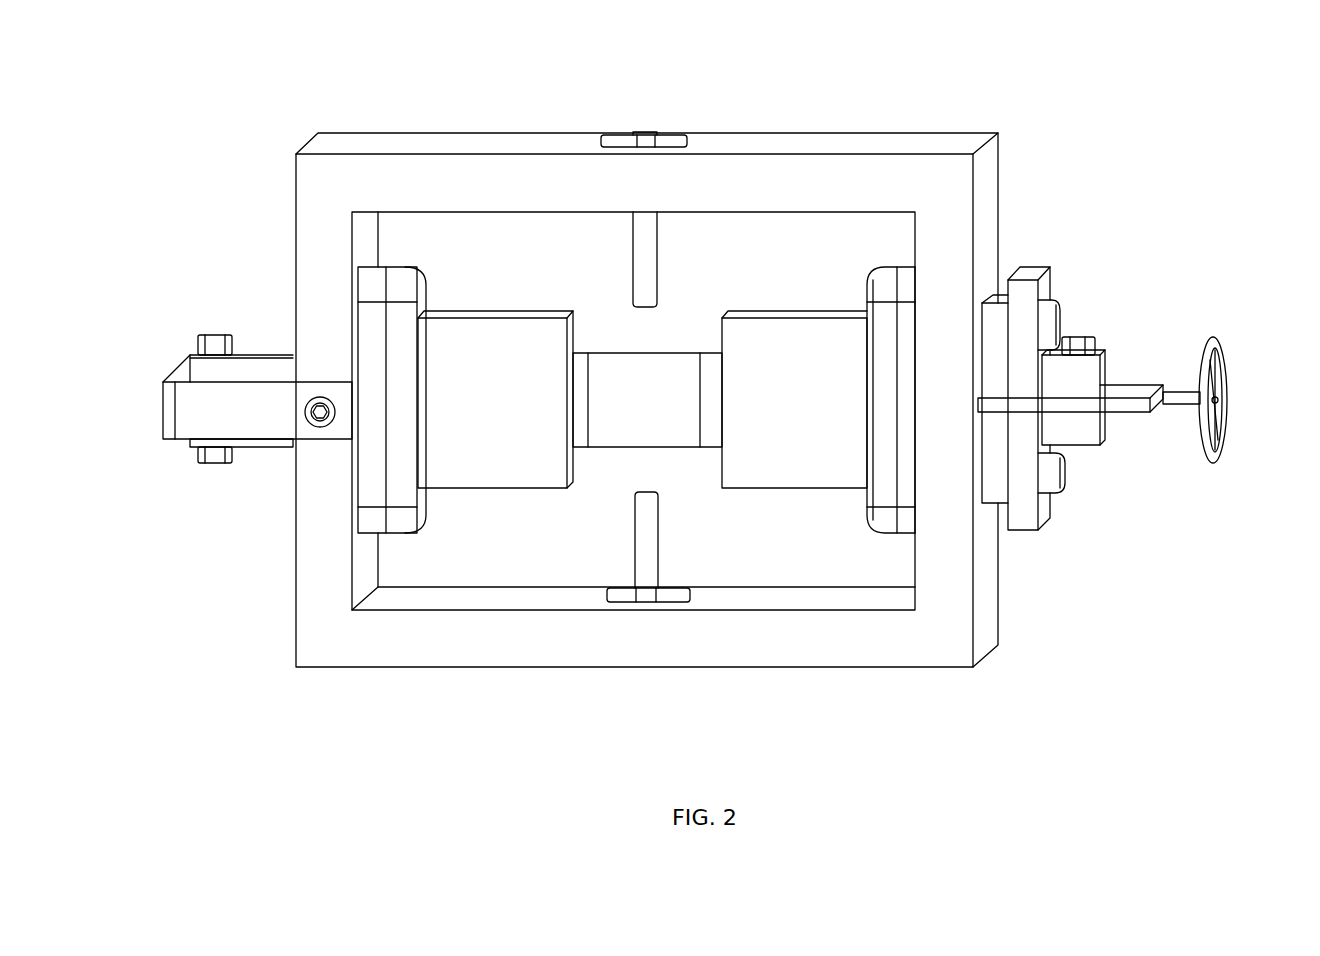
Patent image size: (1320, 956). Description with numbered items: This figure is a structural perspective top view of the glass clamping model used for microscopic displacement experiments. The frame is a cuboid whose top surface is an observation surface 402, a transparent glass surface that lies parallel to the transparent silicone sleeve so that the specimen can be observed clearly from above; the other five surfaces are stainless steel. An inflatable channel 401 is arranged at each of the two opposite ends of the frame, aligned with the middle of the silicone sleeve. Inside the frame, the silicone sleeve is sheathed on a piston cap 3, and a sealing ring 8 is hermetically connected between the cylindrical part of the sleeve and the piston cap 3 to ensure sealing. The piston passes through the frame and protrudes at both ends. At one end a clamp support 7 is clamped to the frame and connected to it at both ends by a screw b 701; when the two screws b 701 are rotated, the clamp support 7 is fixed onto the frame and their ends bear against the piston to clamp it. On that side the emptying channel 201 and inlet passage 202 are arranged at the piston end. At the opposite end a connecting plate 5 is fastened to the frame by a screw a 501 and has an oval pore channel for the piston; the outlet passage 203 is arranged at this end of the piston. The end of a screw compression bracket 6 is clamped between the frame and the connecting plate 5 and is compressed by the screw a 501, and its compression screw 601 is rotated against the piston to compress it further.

The piston cap 3 is at (368, 288).
The inflatable channel 401 is at (648, 233).
The observation surface 402 is at (495, 272).
The sealing ring 8 is at (386, 507).
The clamp support 7 is at (180, 415).
The emptying channel 201 is at (213, 335).
The inlet passage 202 is at (215, 465).
The screw b 701 is at (316, 424).
The connecting plate 5 is at (1027, 522).
The screw a 501 is at (1053, 495).
The outlet passage 203 is at (1080, 337).
The screw compression bracket 6 is at (1128, 383).
The compression screw 601 is at (1208, 345).